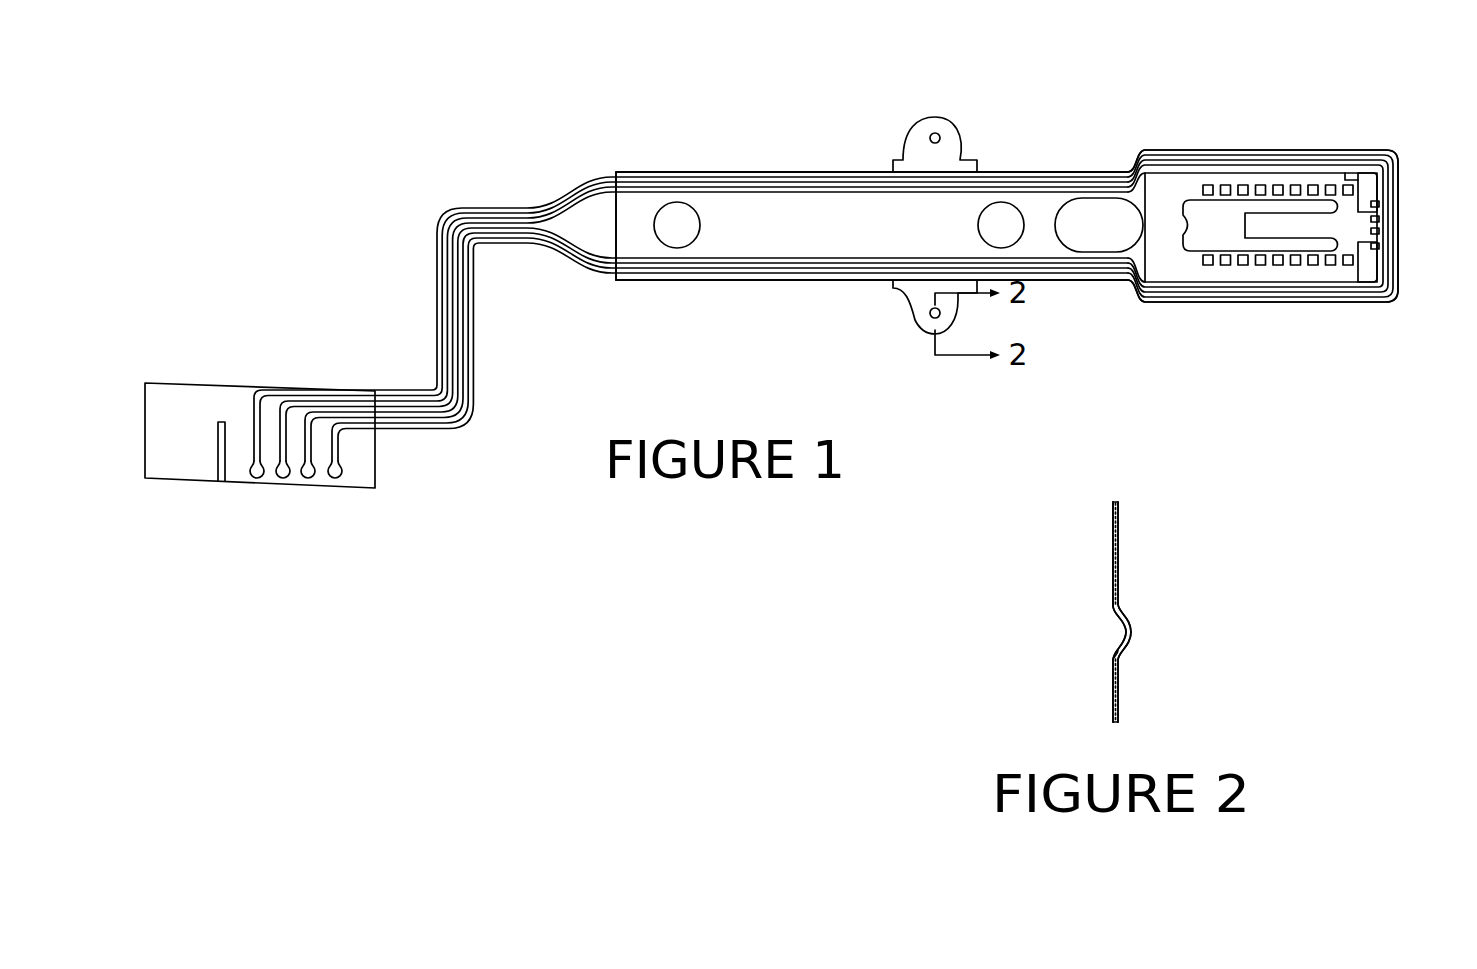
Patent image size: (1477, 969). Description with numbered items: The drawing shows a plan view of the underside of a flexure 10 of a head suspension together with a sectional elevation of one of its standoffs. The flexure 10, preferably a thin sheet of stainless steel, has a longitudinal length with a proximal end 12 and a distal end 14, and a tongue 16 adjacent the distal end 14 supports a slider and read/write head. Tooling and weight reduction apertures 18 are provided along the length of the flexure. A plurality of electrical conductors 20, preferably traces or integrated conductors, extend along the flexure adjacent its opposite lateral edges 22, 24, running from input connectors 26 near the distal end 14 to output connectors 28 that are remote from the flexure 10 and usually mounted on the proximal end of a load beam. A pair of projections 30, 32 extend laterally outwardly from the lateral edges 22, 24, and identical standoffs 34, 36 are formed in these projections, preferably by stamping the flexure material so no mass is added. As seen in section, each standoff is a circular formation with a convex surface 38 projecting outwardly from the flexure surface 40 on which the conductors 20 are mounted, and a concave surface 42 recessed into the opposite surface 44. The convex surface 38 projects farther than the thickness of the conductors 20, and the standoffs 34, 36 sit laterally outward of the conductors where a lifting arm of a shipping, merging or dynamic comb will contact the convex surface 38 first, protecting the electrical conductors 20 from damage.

In FIG. 1, the flexure 10 is at (1083, 120).
In FIG. 1, the proximal end 12 is at (615, 223).
In FIG. 1, the distal end 14 is at (1398, 190).
In FIG. 1, the tongue 16 is at (1293, 212).
In FIG. 1, the tooling and weight reduction apertures 18 is at (677, 212).
In FIG. 1, the electrical conductors 20 is at (452, 226).
In FIG. 1, the lateral edge 22 is at (780, 173).
In FIG. 1, the lateral edge 24 is at (777, 280).
In FIG. 1, the input connectors 26 is at (1422, 225).
In FIG. 1, the output connectors 28 is at (335, 475).
In FIG. 1, the projection 30 is at (955, 160).
In FIG. 1, the projection 32 is at (913, 298).
In FIG. 1, the standoff 34 is at (926, 133).
In FIG. 1, the standoff 36 is at (928, 317).
In FIG. 2, the standoff 36 is at (1133, 673).
In FIG. 2, the convex surface 38 is at (1132, 633).
In FIG. 2, the flexure surface 40 is at (1118, 527).
In FIG. 2, the concave surface 42 is at (1120, 650).
In FIG. 2, the opposite surface 44 is at (1113, 563).